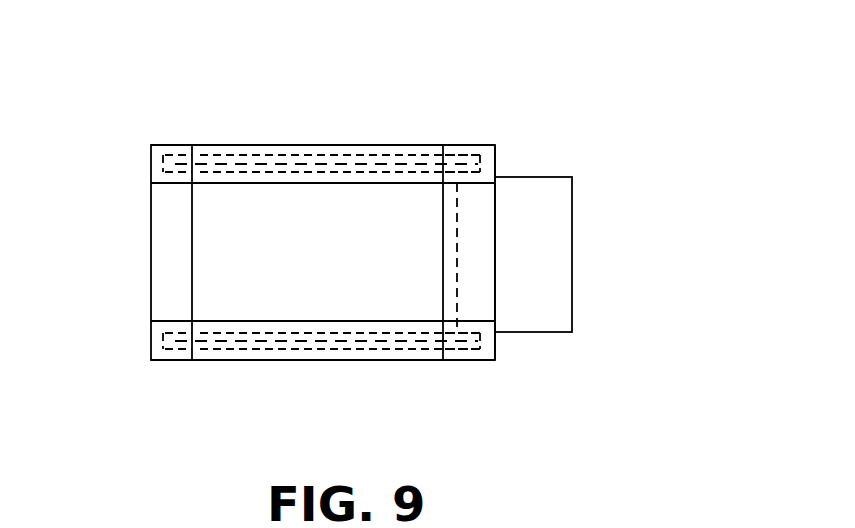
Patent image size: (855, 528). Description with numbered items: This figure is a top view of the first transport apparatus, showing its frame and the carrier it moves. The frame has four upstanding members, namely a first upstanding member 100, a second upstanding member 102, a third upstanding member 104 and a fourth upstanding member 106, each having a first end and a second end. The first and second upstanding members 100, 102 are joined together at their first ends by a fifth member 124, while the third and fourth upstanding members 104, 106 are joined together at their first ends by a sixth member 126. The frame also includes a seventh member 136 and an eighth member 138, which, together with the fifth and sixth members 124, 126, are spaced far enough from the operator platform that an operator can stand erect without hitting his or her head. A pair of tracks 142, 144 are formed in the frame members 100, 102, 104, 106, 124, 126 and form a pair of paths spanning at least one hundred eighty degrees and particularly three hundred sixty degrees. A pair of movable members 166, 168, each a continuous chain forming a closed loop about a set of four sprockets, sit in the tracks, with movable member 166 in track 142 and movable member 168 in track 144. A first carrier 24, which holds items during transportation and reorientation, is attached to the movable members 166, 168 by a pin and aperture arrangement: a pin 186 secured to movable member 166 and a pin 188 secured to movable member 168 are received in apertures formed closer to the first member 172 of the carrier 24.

The first carrier 24 is at (612, 182).
The first upstanding member 100 is at (163, 328).
The second upstanding member 102 is at (473, 361).
The third upstanding member 104 is at (470, 148).
The fourth upstanding member 106 is at (165, 178).
The fifth member 124 is at (283, 361).
The sixth member 126 is at (282, 145).
The seventh member 136 is at (170, 260).
The eighth member 138 is at (482, 287).
The track 142 is at (255, 332).
The track 144 is at (268, 170).
The movable member 166 is at (363, 348).
The movable member 168 is at (358, 158).
The first member 172 is at (562, 249).
The pin 186 is at (477, 332).
The pin 188 is at (477, 173).